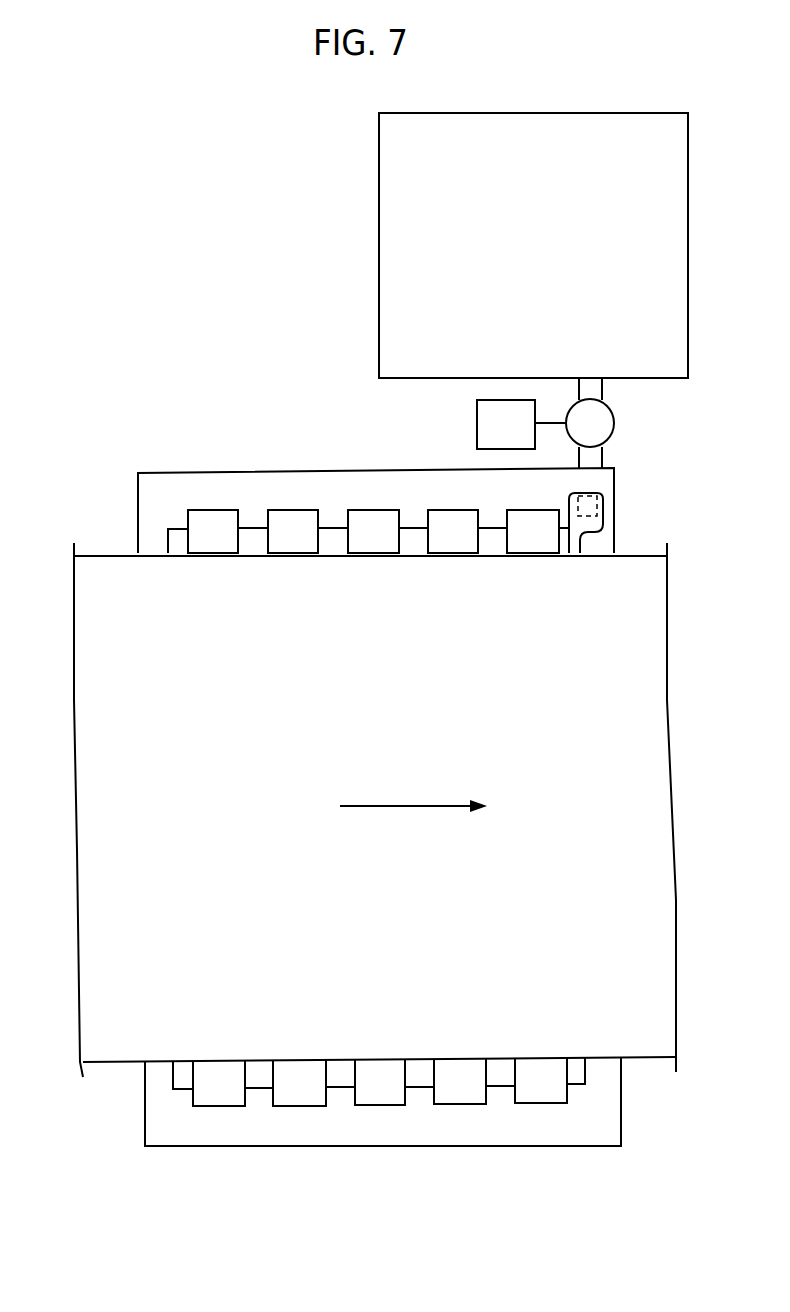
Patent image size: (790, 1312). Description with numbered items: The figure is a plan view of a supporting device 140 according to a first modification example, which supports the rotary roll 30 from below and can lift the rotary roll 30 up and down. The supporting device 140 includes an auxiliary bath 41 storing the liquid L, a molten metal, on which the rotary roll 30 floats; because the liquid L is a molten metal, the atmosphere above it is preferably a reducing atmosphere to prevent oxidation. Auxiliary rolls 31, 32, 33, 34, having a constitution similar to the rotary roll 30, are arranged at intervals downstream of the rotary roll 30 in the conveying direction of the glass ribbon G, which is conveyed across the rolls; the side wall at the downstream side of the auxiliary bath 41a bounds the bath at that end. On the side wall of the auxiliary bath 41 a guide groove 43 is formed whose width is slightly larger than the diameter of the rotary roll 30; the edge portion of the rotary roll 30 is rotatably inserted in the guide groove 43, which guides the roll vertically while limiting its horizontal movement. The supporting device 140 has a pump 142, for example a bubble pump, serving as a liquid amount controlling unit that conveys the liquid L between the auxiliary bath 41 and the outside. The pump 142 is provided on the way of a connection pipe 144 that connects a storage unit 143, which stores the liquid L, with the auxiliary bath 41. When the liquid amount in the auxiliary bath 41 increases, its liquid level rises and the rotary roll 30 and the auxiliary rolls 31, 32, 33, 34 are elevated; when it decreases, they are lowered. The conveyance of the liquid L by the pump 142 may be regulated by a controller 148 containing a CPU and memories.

The storage unit 143 is at (383, 272).
The connection pipe 144 is at (594, 391).
The pump 142 is at (608, 425).
The controller 148 is at (480, 421).
The supporting device 140 is at (177, 460).
The guide groove 43 is at (188, 519).
The liquid L is at (178, 538).
The glass ribbon G is at (87, 803).
The auxiliary bath 41 is at (162, 1119).
The side wall at downstream side of auxiliary bath 41a is at (612, 1080).
The rotary roll 30 is at (217, 1100).
The auxiliary roll 31 is at (303, 1100).
The auxiliary roll 32 is at (382, 1100).
The auxiliary roll 33 is at (460, 1098).
The auxiliary roll 34 is at (542, 1098).